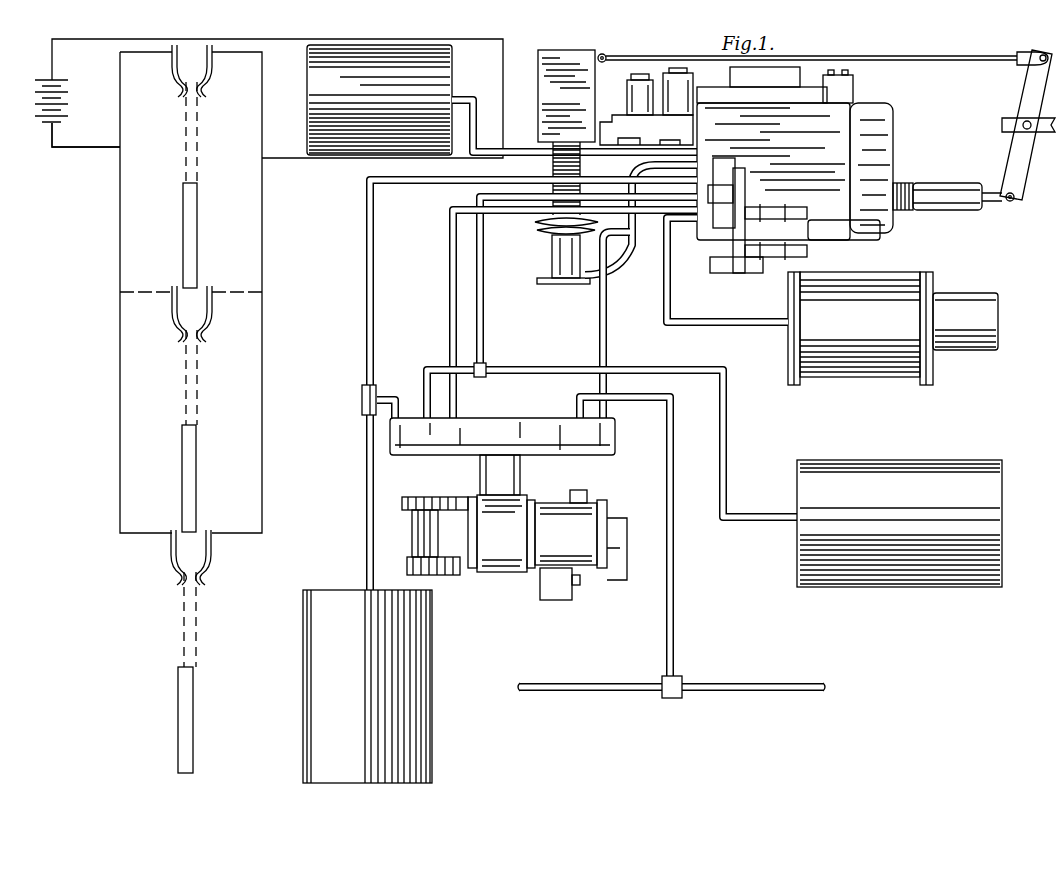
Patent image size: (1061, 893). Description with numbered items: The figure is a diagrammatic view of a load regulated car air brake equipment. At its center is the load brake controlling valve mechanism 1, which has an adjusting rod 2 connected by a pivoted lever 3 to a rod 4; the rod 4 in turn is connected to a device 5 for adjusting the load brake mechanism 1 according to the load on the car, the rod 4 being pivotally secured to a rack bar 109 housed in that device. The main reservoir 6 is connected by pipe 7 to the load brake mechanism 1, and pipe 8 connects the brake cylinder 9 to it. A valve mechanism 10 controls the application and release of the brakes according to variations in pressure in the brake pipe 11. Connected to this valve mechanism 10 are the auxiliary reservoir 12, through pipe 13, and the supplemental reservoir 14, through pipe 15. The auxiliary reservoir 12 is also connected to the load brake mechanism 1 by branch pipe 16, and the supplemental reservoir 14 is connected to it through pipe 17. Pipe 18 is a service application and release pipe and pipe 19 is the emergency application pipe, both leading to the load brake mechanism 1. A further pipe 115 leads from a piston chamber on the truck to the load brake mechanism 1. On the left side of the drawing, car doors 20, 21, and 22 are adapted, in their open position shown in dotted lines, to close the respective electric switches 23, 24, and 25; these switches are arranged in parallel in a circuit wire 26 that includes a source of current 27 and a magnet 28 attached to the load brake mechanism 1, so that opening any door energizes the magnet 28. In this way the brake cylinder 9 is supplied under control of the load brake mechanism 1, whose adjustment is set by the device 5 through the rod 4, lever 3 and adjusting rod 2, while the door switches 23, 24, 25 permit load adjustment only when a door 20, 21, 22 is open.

The load brake controlling valve mechanism 1 is at (835, 150).
The adjusting rod 2 is at (996, 192).
The pivoted lever 3 is at (1030, 96).
The rod 4 is at (958, 61).
The device for adjusting the load brake mechanism 5 is at (548, 95).
The main reservoir 6 is at (322, 75).
The pipe 7 is at (478, 127).
The pipe 8 is at (672, 292).
The brake cylinder 9 is at (905, 276).
The valve mechanism 10 is at (510, 500).
The brake pipe 11 is at (678, 586).
The auxiliary reservoir 12 is at (810, 470).
The pipe 13 is at (726, 421).
The supplemental reservoir 14 is at (329, 605).
The pipe 15 is at (362, 465).
The branch pipe 16 is at (482, 322).
The pipe 17 is at (373, 267).
The service application and release pipe 18 is at (452, 329).
The emergency application pipe 19 is at (607, 331).
The car door 20 is at (197, 251).
The car door 21 is at (196, 486).
The car door 22 is at (194, 727).
The electric switch 23 is at (208, 76).
The electric switch 24 is at (208, 318).
The electric switch 25 is at (207, 554).
The circuit wire 26 is at (85, 149).
The source of current 27 is at (62, 104).
The magnet 28 is at (626, 103).
The rack bar 109 is at (603, 54).
The pipe 115 is at (622, 260).